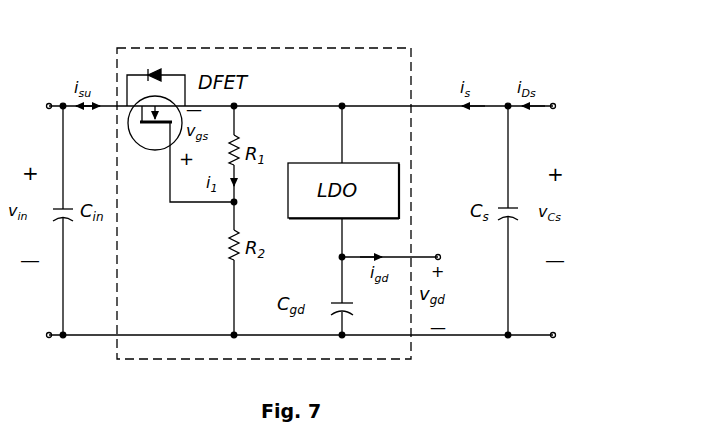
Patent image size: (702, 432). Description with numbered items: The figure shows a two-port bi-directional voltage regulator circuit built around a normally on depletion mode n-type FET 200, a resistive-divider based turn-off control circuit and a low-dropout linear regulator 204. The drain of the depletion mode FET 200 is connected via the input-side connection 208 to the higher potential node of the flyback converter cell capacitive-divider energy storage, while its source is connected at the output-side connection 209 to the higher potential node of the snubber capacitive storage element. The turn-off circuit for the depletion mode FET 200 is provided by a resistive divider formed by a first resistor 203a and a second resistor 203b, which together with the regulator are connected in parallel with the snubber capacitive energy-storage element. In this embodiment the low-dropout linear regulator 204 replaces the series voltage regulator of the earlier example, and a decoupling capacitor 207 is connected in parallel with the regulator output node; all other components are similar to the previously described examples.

The depletion mode n-type FET 200 is at (165, 59).
The resistor R1 203a is at (296, 118).
The resistor R2 203b is at (221, 248).
The low-dropout linear regulator 204 is at (402, 151).
The decoupling capacitor 207 is at (331, 294).
The connection to higher potential node of the input capacitive-divider energy stora 208 is at (77, 231).
The connection to higher potential node of the snubber capacitive storage element 209 is at (519, 237).